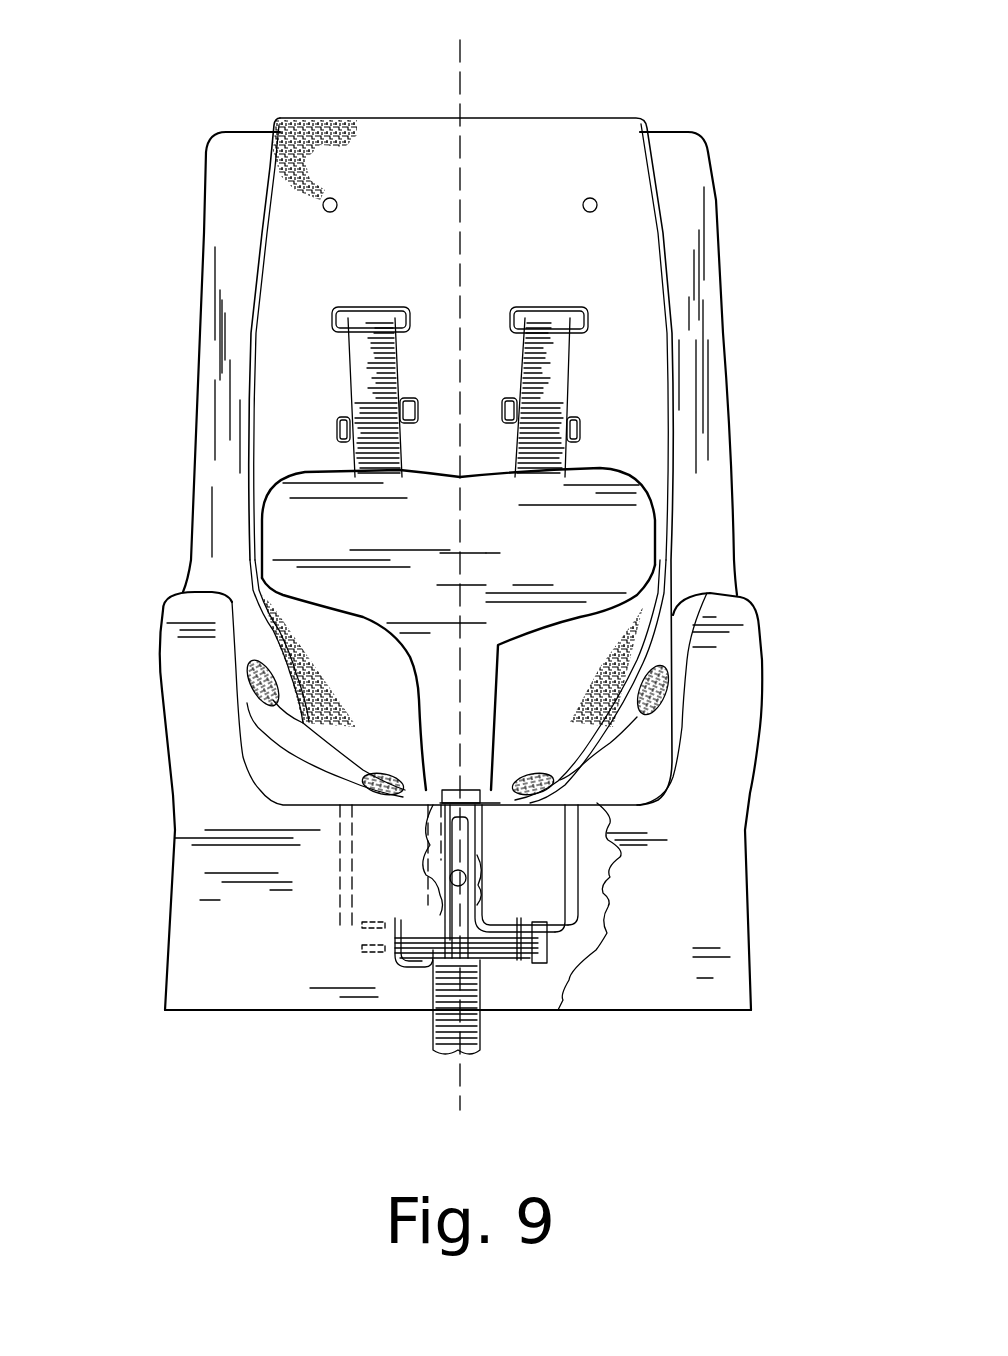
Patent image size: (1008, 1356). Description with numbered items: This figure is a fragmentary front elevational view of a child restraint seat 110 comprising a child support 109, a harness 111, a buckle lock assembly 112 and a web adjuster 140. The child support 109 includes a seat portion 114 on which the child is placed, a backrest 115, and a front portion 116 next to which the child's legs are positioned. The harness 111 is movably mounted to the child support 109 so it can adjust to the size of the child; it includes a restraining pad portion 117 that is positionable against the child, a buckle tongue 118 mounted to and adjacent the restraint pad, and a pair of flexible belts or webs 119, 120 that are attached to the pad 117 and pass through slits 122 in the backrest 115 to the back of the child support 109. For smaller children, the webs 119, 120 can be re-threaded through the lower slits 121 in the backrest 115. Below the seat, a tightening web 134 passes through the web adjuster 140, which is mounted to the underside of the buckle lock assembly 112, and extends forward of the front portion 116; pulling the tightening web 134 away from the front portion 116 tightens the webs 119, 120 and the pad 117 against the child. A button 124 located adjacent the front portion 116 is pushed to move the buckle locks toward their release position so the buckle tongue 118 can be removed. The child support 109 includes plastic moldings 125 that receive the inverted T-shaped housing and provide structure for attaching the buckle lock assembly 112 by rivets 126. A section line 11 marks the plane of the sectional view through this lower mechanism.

The section line 11- 11 is at (460, 40).
The child support 109 is at (775, 898).
The child restraint seat 110 is at (135, 700).
The harness 111 is at (596, 380).
The buckle lock assembly 112 is at (510, 972).
The seat portion 114 is at (513, 770).
The backrest 115 is at (283, 422).
The front portion 116 is at (247, 950).
The restraining pad portion 117 is at (283, 540).
The buckle tongue 118 is at (427, 793).
The flexible belt or web 119 is at (347, 350).
The flexible belt or web 120 is at (569, 358).
The slits 121 is at (417, 403).
The slits 122 is at (417, 313).
The button 124 is at (447, 875).
The plastic moldings 125 is at (586, 925).
The rivets 126 is at (540, 917).
The tightening web 134 is at (486, 1040).
The web adjuster 140 is at (412, 992).